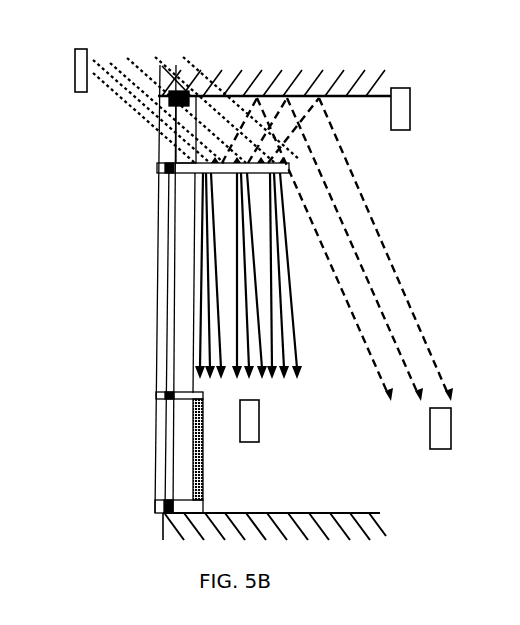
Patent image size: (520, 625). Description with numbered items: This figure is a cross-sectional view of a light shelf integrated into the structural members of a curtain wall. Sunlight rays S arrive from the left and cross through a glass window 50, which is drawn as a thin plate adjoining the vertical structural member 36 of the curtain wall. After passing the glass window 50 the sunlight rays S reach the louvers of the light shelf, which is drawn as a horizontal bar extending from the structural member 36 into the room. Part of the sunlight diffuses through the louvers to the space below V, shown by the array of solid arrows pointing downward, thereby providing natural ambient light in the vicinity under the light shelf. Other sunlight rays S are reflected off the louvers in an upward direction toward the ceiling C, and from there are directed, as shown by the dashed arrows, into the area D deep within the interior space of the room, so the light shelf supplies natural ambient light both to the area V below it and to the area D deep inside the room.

The tube 36 is at (174, 292).
The glass window 50 is at (158, 153).
The sunlight rays S is at (81, 70).
The ceiling C is at (400, 109).
The area deep within the interior space D is at (440, 428).
The space below the light shelf V is at (249, 421).